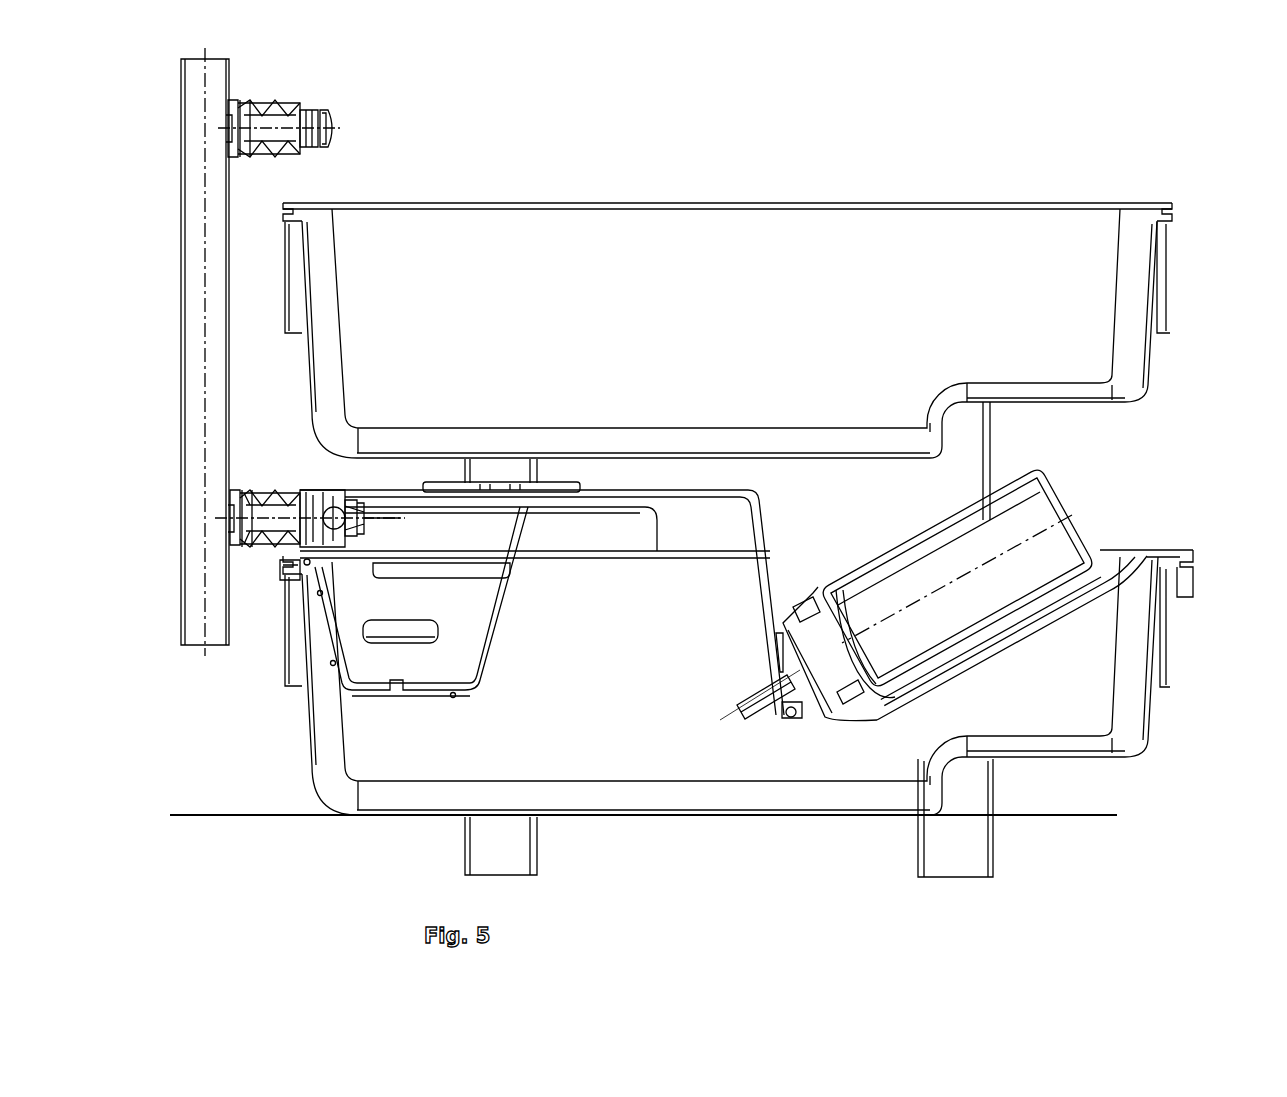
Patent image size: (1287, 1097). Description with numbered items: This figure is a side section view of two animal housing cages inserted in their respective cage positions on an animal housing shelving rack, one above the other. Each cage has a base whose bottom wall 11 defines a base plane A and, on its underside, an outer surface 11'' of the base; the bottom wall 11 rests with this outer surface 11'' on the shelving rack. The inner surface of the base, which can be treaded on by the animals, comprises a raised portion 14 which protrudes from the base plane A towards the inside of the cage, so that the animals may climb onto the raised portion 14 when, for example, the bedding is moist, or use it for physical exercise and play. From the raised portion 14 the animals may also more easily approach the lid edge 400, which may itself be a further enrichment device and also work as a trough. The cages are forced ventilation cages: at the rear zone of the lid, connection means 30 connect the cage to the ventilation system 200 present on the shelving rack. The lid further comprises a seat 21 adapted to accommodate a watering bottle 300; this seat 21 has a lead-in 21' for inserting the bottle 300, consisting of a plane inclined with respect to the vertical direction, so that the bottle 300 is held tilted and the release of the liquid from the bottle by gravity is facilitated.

The ventilation system 200 is at (262, 486).
The connection means 30 is at (305, 482).
The watering bottle 300 is at (1080, 491).
The seat 21 is at (807, 607).
The lead-in (inclined plane) 21' is at (1073, 638).
The raised portion 14 is at (1060, 753).
The bottom wall 11 is at (738, 682).
The edge 400 is at (518, 688).
The outer surface of the base 11'' is at (643, 848).
The base plane A is at (1078, 817).